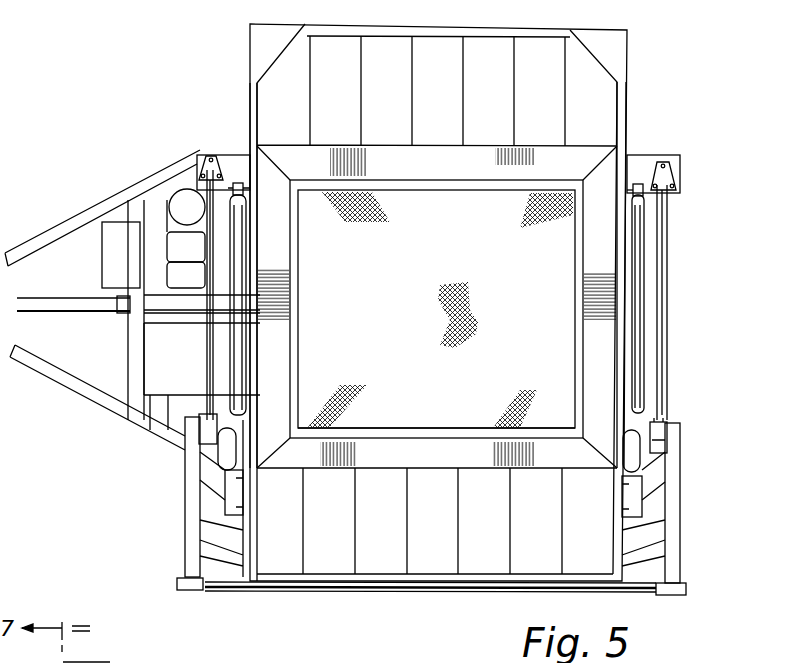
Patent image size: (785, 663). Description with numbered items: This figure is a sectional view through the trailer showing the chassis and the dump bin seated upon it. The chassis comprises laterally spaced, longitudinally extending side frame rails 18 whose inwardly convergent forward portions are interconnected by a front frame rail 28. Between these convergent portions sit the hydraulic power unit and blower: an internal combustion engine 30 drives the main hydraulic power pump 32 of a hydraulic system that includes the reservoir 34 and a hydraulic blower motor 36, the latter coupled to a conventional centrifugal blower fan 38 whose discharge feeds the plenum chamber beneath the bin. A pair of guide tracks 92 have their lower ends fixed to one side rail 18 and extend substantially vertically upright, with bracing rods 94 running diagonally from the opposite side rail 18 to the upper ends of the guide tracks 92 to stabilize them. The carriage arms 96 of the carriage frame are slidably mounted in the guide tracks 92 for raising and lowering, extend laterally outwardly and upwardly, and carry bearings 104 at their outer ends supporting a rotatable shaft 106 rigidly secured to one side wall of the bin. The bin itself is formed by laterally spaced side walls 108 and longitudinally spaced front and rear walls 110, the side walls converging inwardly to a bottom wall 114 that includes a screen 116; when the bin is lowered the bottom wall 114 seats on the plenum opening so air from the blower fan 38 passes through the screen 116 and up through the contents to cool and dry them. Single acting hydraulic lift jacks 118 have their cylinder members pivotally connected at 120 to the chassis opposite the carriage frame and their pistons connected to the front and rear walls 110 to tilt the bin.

The side frame rail 18 is at (232, 155).
The front frame rail 28 is at (133, 355).
The internal combustion engine 30 is at (167, 240).
The main hydraulic power pump 32 is at (184, 190).
The reservoir 34 is at (110, 222).
The hydraulic blower motor 36 is at (178, 410).
The centrifugal blower fan 38 is at (155, 334).
The guide track 92 is at (200, 430).
The bracing rod 94 is at (207, 357).
The carriage arm 96 is at (185, 543).
The bearing 104 is at (185, 589).
The rotatable shaft 106 is at (285, 591).
The side wall 108 is at (500, 48).
The front and rear walls 110 is at (250, 96).
The bottom wall 114 is at (333, 236).
The screen 116 is at (420, 418).
The hydraulic lift jack 118 is at (232, 368).
The pivotal connection 120 is at (247, 192).